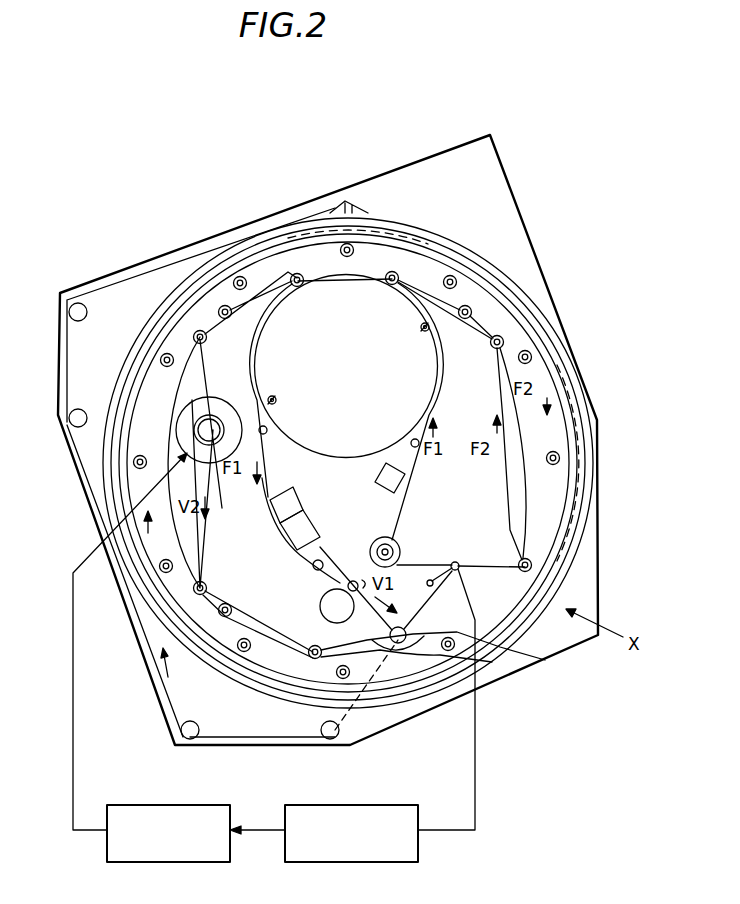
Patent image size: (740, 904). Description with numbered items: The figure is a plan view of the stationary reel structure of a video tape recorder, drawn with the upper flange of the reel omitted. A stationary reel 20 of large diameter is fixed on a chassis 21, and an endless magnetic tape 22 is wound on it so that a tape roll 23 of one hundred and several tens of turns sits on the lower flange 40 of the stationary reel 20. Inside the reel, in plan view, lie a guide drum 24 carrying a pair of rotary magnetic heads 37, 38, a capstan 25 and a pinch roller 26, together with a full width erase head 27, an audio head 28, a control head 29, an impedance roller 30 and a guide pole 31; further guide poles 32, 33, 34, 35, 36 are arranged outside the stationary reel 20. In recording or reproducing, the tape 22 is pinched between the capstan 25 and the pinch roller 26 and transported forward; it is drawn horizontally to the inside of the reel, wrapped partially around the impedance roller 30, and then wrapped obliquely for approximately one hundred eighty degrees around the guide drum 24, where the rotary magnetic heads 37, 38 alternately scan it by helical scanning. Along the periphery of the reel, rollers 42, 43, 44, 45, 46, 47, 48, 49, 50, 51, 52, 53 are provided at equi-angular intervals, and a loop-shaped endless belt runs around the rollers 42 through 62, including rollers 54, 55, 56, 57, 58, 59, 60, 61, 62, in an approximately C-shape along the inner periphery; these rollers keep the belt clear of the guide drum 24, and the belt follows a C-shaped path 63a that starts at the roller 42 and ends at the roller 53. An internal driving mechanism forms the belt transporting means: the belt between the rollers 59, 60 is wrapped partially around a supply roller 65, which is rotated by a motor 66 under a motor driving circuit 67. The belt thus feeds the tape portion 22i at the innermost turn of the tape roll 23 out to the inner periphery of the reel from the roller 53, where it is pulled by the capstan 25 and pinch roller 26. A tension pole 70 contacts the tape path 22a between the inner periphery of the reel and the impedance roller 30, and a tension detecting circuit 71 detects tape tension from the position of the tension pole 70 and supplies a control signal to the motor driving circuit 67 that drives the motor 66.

The stationary reel 20 is at (522, 272).
The chassis 21 is at (496, 167).
The endless magnetic tape 22 is at (403, 503).
The tape path 22a is at (433, 563).
The tape portion 22i is at (563, 425).
The tape roll 23 is at (585, 447).
The guide drum 24 is at (428, 380).
The capstan 25 is at (352, 580).
The pinch roller 26 is at (325, 598).
The full width erase head 27 is at (380, 478).
The audio head 28 is at (285, 498).
The control head 29 is at (303, 533).
The impedance roller 30 is at (395, 541).
The guide pole 31 is at (400, 628).
The guide pole 32 is at (333, 738).
The guide pole 33 is at (190, 738).
The guide pole 34 is at (70, 416).
The guide pole 35 is at (72, 310).
The guide pole 36 is at (342, 205).
The rotary magnetic head 37 is at (421, 331).
The rotary magnetic head 38 is at (276, 402).
The lower flange 40 is at (498, 264).
The roller 42 is at (500, 647).
The roller 43 is at (433, 655).
The roller 44 is at (261, 649).
The roller 45 is at (166, 560).
The roller 46 is at (141, 456).
The roller 47 is at (166, 367).
The roller 48 is at (236, 278).
The roller 49 is at (350, 245).
The roller 50 is at (452, 276).
The roller 51 is at (540, 363).
The roller 52 is at (549, 463).
The roller 53 is at (525, 558).
The roller 54 is at (492, 345).
The roller 55 is at (459, 315).
The roller 56 is at (388, 284).
The roller 57 is at (285, 270).
The roller 58 is at (227, 318).
The roller 59 is at (204, 343).
The roller 60 is at (204, 582).
The roller 61 is at (230, 605).
The roller 62 is at (316, 646).
The C-shaped path 63a is at (557, 400).
The supply roller 65 is at (215, 470).
The motor 66 is at (199, 452).
The motor driving circuit 67 is at (208, 805).
The tension pole 70 is at (458, 569).
The tension detecting circuit 71 is at (388, 805).